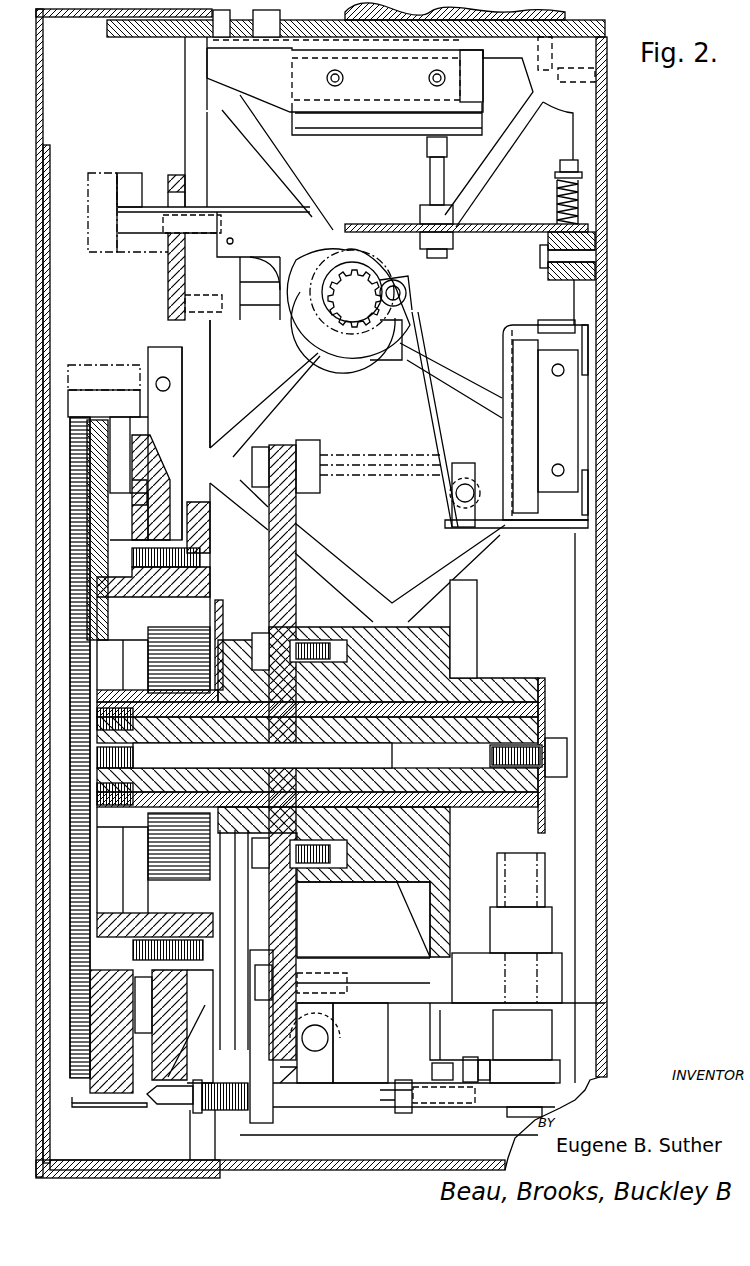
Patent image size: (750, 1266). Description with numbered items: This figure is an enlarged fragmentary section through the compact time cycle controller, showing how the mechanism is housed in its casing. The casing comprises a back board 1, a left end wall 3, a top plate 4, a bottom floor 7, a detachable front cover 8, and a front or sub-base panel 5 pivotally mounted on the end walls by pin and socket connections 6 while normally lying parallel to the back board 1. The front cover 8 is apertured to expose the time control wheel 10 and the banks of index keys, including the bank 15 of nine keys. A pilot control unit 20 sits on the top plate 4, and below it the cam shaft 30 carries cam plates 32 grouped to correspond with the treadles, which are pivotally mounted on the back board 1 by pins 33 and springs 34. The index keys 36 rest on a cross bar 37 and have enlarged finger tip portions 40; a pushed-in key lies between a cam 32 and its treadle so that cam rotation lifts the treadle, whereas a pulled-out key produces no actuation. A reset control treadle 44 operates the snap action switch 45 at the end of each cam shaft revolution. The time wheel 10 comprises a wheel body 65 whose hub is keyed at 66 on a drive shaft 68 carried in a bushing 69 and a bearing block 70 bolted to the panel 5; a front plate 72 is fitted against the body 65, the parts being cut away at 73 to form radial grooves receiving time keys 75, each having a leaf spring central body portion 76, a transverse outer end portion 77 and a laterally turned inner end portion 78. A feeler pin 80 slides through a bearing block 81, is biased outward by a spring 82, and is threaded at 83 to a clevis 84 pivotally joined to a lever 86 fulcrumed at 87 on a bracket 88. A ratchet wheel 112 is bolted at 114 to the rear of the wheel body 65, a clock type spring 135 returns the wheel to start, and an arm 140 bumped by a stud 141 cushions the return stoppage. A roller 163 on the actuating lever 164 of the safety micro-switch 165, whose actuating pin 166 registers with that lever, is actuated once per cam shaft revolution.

The back board 1 is at (607, 590).
The left end wall 3 is at (575, 663).
The top plate 4 is at (143, 37).
The sub-base panel 5 is at (296, 515).
The pin and socket connections 6 is at (318, 1040).
The bottom floor 7 is at (355, 1170).
The front cover 8 is at (124, 593).
The time control wheel 10 is at (122, 1108).
The bank of keys 15 is at (112, 172).
The pilot control unit 20 is at (348, 18).
The cam shaft 30 is at (343, 310).
The cam plates 32 is at (318, 275).
The pins 33 is at (565, 165).
The springs 34 is at (555, 208).
The index keys 36 is at (255, 207).
The cross bar 37 is at (168, 275).
The finger tip portions 40 is at (133, 173).
The reset control treadle 44 is at (485, 218).
The snap action switch 45 is at (488, 70).
The wheel body 65 is at (150, 455).
The hub keying 66 is at (155, 745).
The drive shaft 68 is at (265, 748).
The bushing 69 is at (508, 705).
The bearing block 70 is at (322, 627).
The front plate 72 is at (72, 452).
The grooves 73 is at (122, 597).
The time key 75 is at (72, 400).
The central body portion 76 is at (120, 440).
The outer end portion 77 is at (95, 390).
The inner end portion 78 is at (165, 500).
The feeler pin 80 is at (175, 1104).
The bearing block 81 is at (273, 1113).
The spring 82 is at (230, 1083).
The threaded connection 83 is at (437, 1103).
The clevis 84 is at (484, 1107).
The lever 86 is at (560, 1070).
The fulcrum 87 is at (552, 1008).
The bracket 88 is at (562, 975).
The ratchet wheel 112 is at (210, 530).
The bolts 114 is at (210, 570).
The clock type spring 135 is at (232, 612).
The arm 140 is at (240, 900).
The stud 141 is at (178, 1067).
The roller 163 is at (412, 279).
The actuating lever 164 is at (430, 338).
The safety micro-switch 165 is at (565, 437).
The actuating pin 166 is at (460, 475).